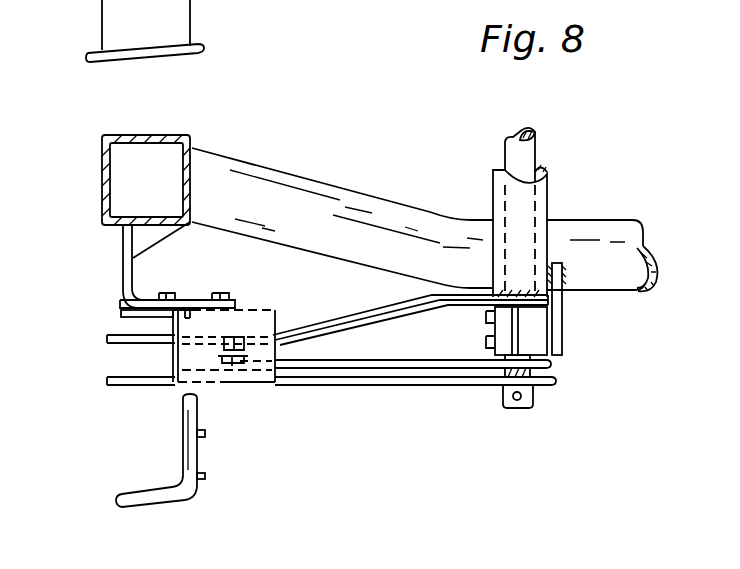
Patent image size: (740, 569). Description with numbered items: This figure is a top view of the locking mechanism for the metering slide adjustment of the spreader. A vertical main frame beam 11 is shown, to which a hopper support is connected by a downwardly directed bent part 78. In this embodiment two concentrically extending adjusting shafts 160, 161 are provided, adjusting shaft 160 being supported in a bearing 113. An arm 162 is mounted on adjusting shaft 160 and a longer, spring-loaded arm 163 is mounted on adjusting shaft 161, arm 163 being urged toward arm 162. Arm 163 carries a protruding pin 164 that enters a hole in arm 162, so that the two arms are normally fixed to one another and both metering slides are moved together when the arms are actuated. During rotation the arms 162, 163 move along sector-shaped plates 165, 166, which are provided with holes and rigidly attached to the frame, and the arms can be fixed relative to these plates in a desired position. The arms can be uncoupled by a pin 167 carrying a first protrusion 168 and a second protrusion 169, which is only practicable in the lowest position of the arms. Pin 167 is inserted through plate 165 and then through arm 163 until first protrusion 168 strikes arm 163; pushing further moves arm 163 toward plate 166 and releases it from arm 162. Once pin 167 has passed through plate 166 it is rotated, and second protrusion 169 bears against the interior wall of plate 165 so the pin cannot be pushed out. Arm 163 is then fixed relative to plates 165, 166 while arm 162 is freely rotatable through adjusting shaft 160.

The main frame beam 11 is at (115, 8).
The bent part 78 is at (281, 178).
The bearing 113 is at (533, 333).
The adjusting shaft 160 is at (505, 139).
The adjusting shaft 161 is at (547, 204).
The arm 162 is at (352, 361).
The arm 163 is at (328, 323).
The protruding pin 164 is at (233, 370).
The sector-shaped plate 165 is at (158, 392).
The sector-shaped plate 166 is at (122, 311).
The pin 167 is at (140, 500).
The first protrusion 168 is at (205, 433).
The second protrusion 169 is at (205, 477).